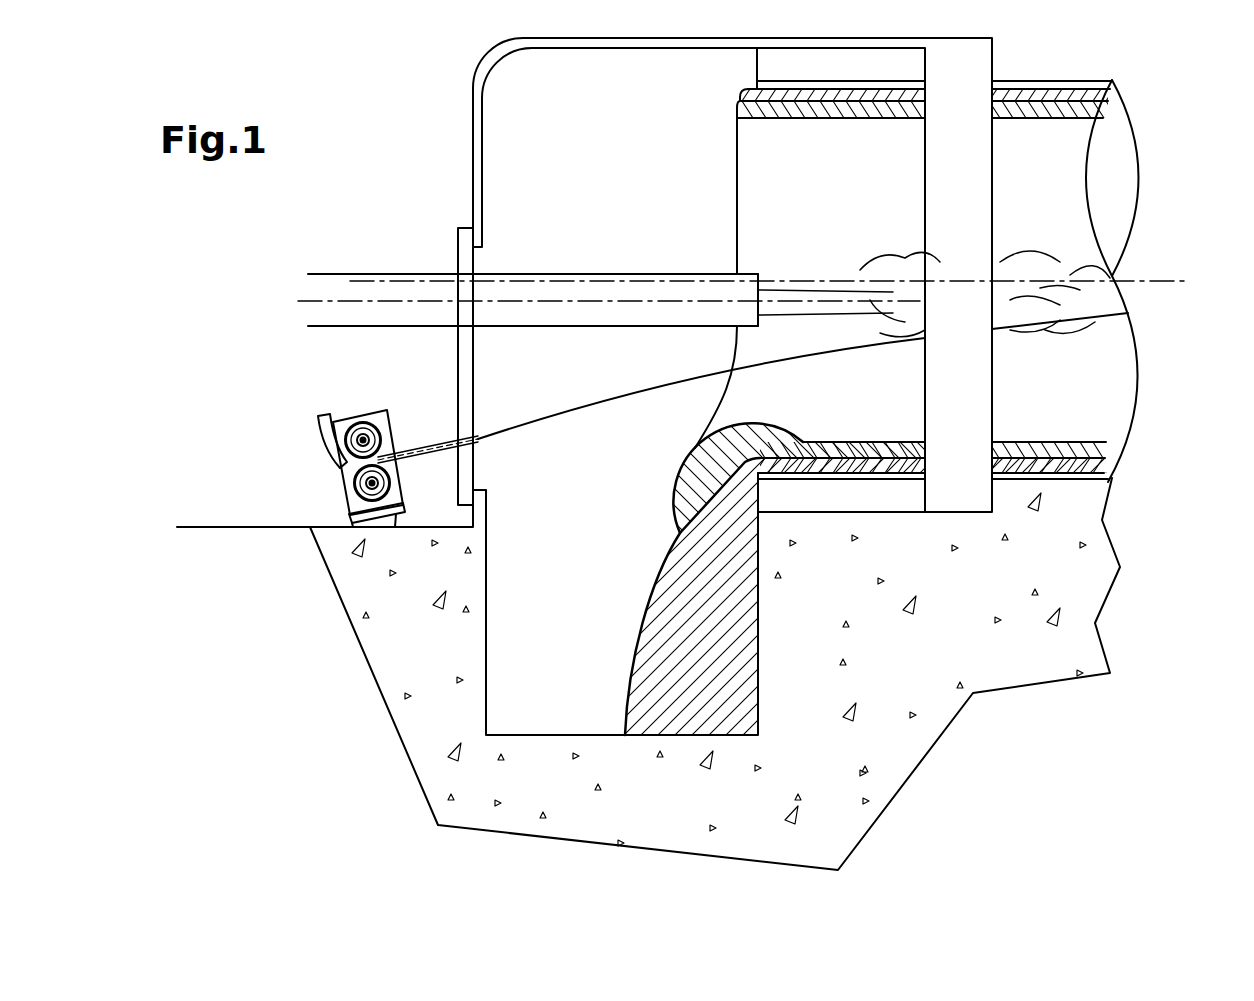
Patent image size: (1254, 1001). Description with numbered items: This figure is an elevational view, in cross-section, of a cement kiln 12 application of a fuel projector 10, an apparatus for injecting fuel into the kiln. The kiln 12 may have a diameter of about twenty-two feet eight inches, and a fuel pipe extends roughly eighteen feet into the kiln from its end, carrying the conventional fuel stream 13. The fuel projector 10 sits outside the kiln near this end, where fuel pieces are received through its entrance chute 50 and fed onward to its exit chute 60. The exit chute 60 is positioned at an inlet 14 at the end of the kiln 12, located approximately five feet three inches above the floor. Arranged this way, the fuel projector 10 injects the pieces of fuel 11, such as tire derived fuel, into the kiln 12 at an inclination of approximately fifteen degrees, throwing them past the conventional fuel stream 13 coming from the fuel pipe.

The fuel projector 10 is at (353, 452).
The pieces of fuel 11 is at (1101, 316).
The kiln 12 is at (938, 259).
The conventional fuel stream 13 is at (974, 265).
The inlet 14 is at (670, 388).
The entrance chute 50 is at (302, 441).
The exit chute 60 is at (423, 413).